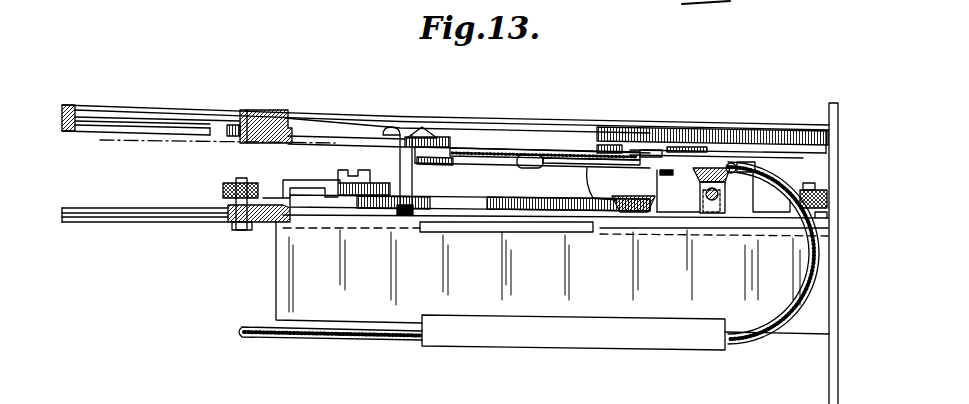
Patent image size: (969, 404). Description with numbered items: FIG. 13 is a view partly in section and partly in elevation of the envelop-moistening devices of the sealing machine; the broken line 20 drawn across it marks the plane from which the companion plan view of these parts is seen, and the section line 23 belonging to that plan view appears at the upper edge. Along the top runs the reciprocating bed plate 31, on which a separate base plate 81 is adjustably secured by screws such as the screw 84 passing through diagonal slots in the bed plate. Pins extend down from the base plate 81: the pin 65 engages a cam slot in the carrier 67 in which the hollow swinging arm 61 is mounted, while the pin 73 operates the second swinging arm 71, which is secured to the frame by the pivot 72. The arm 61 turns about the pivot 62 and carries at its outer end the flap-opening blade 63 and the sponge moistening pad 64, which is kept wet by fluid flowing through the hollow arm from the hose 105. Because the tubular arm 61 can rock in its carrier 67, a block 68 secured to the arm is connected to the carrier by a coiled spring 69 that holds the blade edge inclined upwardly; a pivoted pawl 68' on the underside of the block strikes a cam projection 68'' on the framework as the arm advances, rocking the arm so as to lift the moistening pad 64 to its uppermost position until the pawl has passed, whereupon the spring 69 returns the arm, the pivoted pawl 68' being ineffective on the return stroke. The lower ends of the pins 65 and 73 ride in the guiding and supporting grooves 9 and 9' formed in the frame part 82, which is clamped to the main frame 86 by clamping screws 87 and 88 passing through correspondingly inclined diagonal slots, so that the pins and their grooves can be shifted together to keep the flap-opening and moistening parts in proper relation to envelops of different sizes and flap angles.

The reciprocating bed plate 31 is at (453, 121).
The broken line 20 20 is at (93, 120).
The screw 84 is at (242, 110).
The base plate 81 is at (760, 152).
The moistening pad 64 is at (397, 127).
The flap-opening blade 63 is at (420, 131).
The pin 73 is at (412, 183).
The guiding and supporting groove 9' is at (410, 240).
The pivot 72 is at (343, 176).
The second swinging arm 71 is at (468, 205).
The carrier 67 is at (512, 166).
The hollow swinging arm 61 is at (500, 150).
The coiled spring 69 is at (553, 160).
The pivoted pawl 68' is at (586, 183).
The block 68 is at (619, 117).
The cam projection 68'' is at (671, 117).
The guiding and supporting groove 9 is at (662, 221).
The pin 65 is at (672, 176).
The pivot 62 is at (725, 199).
The clamping screw 88 is at (800, 199).
The frame part 82 is at (223, 207).
The clamping screw 87 is at (230, 183).
The main frame 86 is at (174, 222).
The hose 105 is at (297, 338).
The broken line 23 23 is at (703, 21).